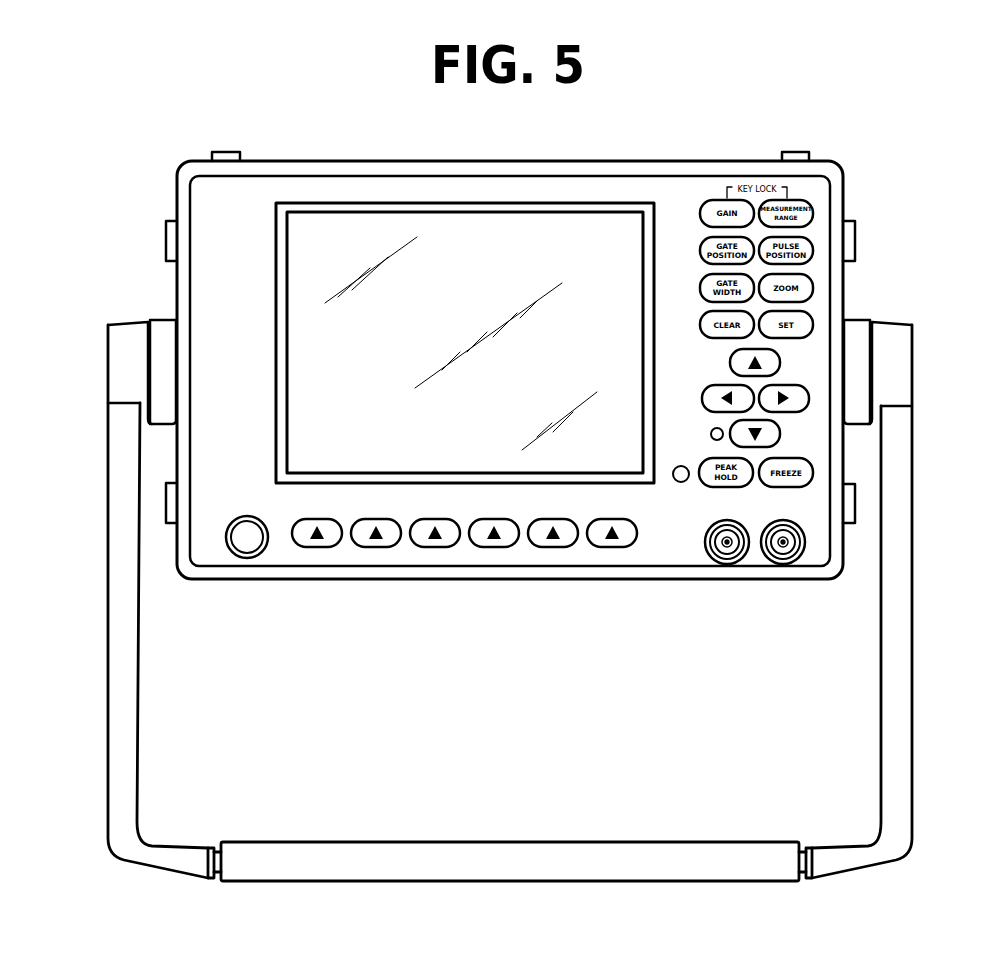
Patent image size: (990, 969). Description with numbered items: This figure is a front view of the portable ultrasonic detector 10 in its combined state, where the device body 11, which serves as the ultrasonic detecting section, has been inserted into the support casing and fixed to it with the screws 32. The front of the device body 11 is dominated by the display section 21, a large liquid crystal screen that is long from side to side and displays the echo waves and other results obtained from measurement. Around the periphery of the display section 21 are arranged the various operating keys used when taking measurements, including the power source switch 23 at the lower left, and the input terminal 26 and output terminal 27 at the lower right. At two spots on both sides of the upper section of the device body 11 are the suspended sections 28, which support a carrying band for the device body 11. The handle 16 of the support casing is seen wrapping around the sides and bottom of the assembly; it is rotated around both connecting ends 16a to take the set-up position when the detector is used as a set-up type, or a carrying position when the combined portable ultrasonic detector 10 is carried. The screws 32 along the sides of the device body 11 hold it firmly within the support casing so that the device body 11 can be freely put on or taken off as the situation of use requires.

The portable ultrasonic detector 10 is at (664, 160).
The device body 11 is at (358, 191).
The display section 21 is at (487, 226).
The power source switch 23 is at (246, 549).
The input terminal 26 is at (783, 565).
The output terminal 27 is at (727, 565).
The suspended sections 28 is at (232, 150).
The screws 32 is at (165, 229).
The handle 16 is at (905, 535).
The connecting ends 16a is at (115, 345).